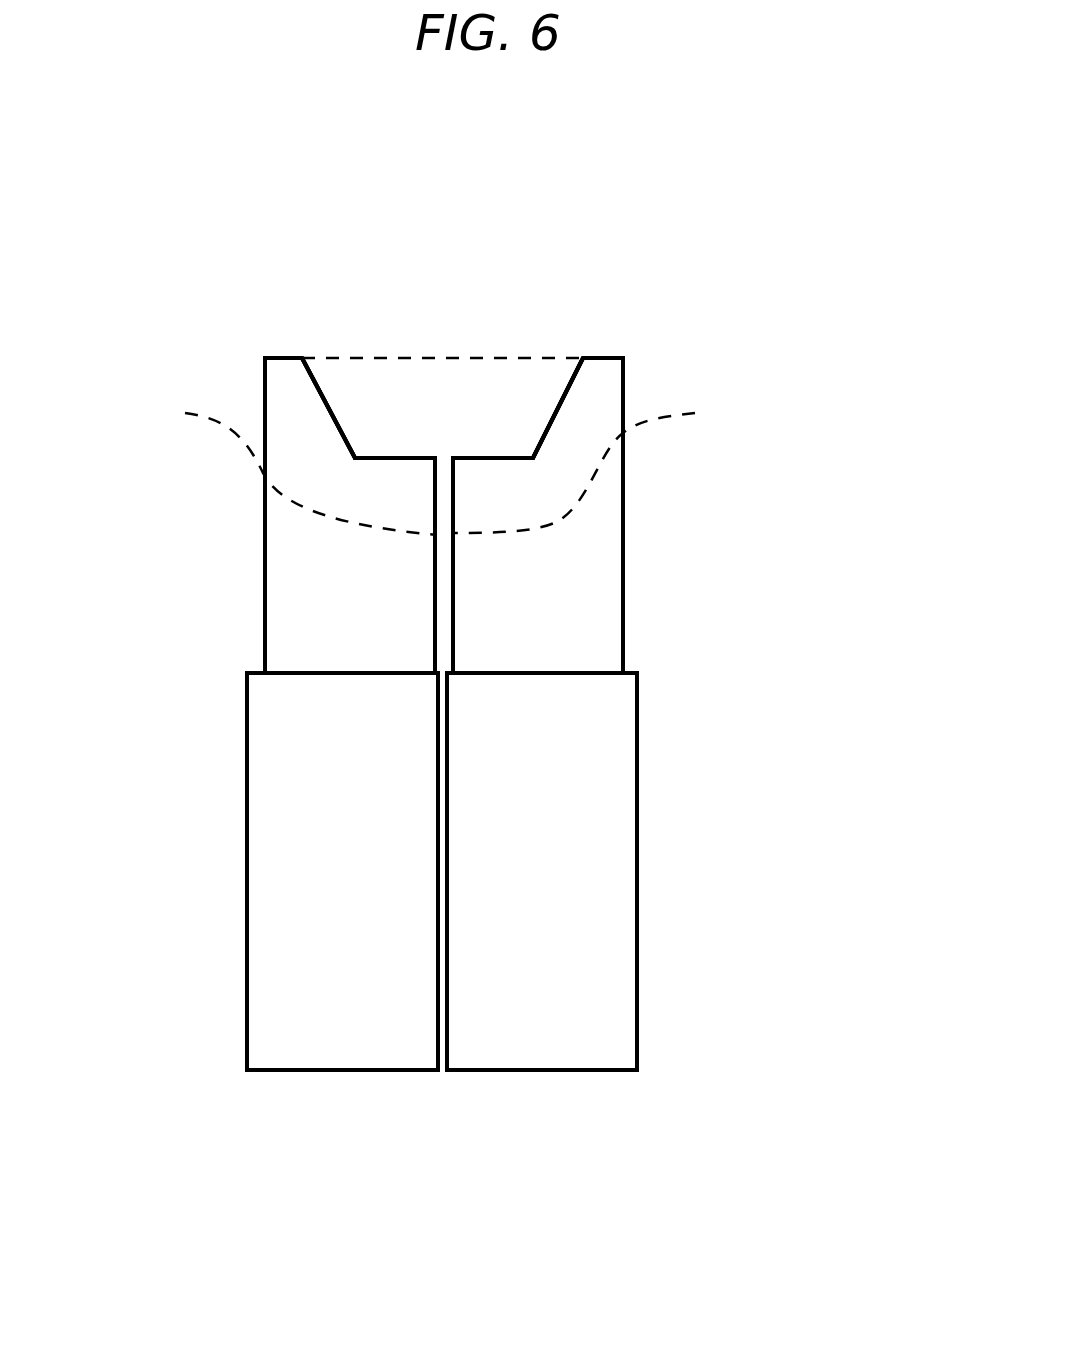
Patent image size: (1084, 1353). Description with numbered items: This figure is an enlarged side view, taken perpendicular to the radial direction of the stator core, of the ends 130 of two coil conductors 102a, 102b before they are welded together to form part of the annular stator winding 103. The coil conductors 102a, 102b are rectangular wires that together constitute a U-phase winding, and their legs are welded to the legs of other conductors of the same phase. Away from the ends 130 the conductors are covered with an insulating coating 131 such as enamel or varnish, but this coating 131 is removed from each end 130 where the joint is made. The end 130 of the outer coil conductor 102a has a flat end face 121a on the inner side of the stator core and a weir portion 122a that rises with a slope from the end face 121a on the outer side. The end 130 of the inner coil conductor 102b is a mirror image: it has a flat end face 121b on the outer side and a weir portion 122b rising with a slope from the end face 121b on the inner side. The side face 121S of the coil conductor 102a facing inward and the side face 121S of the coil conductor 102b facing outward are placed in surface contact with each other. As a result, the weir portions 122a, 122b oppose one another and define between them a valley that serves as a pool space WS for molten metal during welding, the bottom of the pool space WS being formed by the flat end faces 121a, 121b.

The stator winding 103 is at (857, 268).
The coil conductor 102a is at (517, 998).
The coil conductor 102b is at (400, 1003).
The end 130 is at (262, 597).
The insulating coating 131 is at (247, 760).
The end face 121a is at (508, 458).
The end face 121b is at (392, 458).
The weir portion 122a is at (615, 357).
The weir portion 122b is at (278, 357).
The side face 121S is at (431, 464).
The pool space WS is at (563, 358).